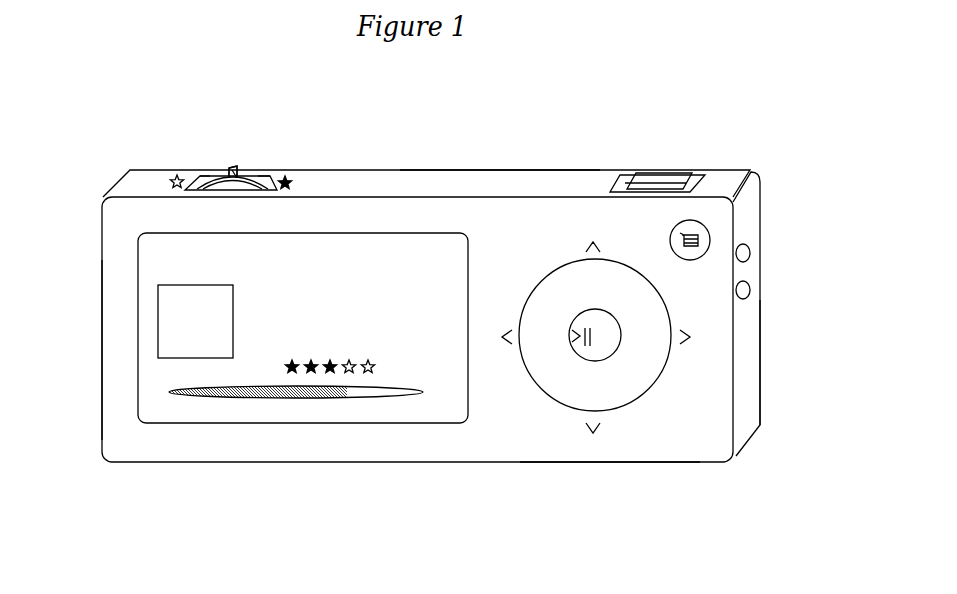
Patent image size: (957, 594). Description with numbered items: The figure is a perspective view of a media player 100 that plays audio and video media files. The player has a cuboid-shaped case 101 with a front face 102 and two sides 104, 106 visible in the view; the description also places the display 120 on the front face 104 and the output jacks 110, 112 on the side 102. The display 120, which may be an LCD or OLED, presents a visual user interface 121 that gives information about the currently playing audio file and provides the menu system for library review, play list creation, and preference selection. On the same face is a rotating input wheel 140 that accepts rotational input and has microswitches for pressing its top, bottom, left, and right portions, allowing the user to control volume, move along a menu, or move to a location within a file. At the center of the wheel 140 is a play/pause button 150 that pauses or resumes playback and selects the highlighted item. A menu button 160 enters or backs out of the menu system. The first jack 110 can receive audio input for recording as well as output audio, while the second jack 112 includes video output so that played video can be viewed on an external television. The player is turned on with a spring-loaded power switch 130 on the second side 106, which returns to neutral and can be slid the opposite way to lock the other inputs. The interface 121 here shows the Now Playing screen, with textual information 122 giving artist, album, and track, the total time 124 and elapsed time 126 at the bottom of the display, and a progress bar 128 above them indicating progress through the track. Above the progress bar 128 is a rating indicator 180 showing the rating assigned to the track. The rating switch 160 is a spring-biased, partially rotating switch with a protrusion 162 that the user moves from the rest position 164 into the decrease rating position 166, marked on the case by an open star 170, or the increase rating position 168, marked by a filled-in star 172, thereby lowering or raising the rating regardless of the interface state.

The media player 100 is at (557, 187).
The case 101 is at (102, 425).
The front face 102 is at (747, 412).
The side 104 is at (545, 437).
The second side 106 is at (470, 185).
The first jack 110 is at (750, 253).
The second jack 112 is at (750, 292).
The display 120 is at (345, 232).
The visual user interface 121 is at (158, 272).
The textual information 122 is at (432, 358).
The total time 124 is at (390, 422).
The elapsed time 126 is at (205, 417).
The progress bar 128 is at (297, 400).
The power switch 130 is at (660, 174).
The rotating input wheel 140 is at (555, 370).
The play/pause button 150 is at (603, 348).
The rating switch 160 is at (220, 168).
The protrusion 162 is at (238, 168).
The rest position 164 is at (242, 172).
The decrease rating position 166 is at (205, 177).
The increase rating position 168 is at (263, 177).
The open star 170 is at (168, 178).
The filled-in star 172 is at (288, 183).
The rating indicator 180 is at (285, 367).